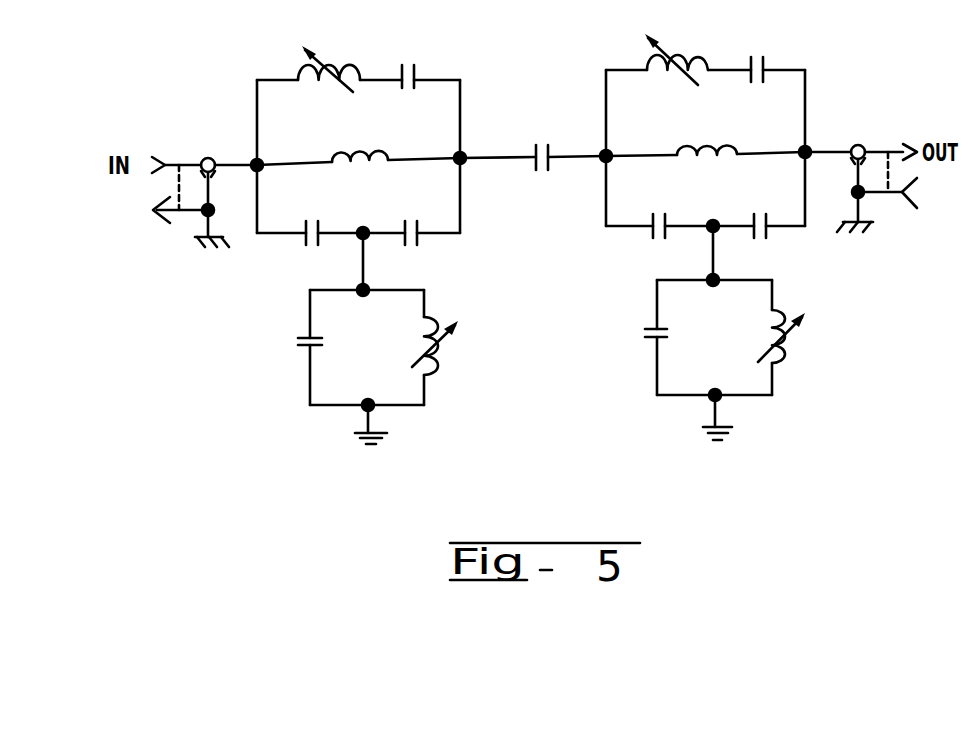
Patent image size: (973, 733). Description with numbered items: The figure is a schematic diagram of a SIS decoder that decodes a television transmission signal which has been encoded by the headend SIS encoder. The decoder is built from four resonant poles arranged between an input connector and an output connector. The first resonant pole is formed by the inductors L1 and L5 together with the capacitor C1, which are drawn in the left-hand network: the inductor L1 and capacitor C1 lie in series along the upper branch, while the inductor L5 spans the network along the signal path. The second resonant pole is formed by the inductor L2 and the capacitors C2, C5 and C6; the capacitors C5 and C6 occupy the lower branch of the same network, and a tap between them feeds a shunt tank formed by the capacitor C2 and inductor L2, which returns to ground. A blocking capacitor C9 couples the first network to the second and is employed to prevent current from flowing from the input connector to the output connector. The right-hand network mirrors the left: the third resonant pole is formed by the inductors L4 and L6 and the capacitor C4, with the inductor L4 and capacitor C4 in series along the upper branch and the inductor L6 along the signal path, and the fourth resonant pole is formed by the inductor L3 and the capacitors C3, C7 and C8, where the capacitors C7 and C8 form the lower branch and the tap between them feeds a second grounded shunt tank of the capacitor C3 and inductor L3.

The inductor L1 is at (329, 59).
The capacitor C1 is at (407, 60).
The inductor L5 is at (360, 139).
The capacitor C5 is at (305, 220).
The capacitor C6 is at (408, 220).
The blocking capacitor C9 is at (533, 141).
The inductor L4 is at (676, 47).
The capacitor C4 is at (758, 54).
The inductor L6 is at (707, 133).
The capacitor C7 is at (654, 212).
The capacitor C8 is at (754, 211).
The capacitor C2 is at (325, 338).
The inductor L2 is at (446, 346).
The capacitor C3 is at (671, 329).
The inductor L3 is at (792, 336).